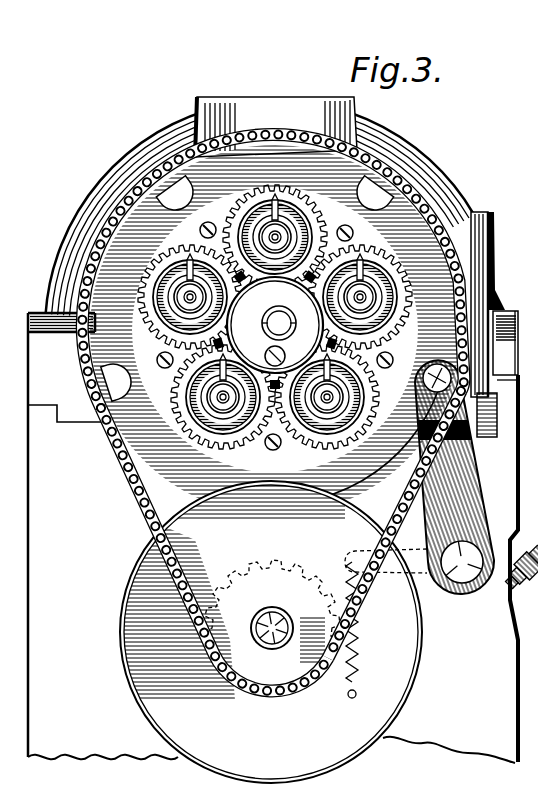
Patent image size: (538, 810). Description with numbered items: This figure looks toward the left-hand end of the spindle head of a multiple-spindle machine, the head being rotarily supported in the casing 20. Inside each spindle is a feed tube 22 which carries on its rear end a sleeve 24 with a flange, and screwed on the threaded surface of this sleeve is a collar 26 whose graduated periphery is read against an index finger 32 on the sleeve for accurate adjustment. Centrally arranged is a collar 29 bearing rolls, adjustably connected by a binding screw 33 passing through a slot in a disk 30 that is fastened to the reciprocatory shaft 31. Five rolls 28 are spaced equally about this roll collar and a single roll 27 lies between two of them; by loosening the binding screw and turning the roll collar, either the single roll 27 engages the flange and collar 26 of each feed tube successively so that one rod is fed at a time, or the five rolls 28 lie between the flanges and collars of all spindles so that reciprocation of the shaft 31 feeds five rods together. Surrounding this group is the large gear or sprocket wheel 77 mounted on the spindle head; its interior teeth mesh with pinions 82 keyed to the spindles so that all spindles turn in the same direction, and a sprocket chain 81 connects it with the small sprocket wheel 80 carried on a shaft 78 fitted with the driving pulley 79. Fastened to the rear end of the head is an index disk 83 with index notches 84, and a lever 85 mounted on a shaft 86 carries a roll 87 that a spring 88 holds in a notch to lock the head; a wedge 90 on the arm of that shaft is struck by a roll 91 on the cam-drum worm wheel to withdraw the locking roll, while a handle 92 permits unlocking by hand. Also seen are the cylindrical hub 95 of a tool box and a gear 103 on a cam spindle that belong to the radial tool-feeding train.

The casing 20 is at (276, 127).
The feed tube 22 is at (178, 297).
The sleeve 24 is at (208, 403).
The collar 26 is at (338, 418).
The single roll 27 is at (275, 325).
The rolls 28 is at (236, 205).
The collar 29 is at (253, 328).
The disk 30 is at (300, 330).
The reciprocatory shaft 31 is at (279, 323).
The index fingers 32 is at (187, 207).
The binding screw 33 is at (264, 353).
The large gear or sprocket wheel 77 is at (128, 500).
The shaft 78 is at (272, 614).
The driving pulley 79 is at (270, 631).
The small gear or sprocket wheel 80 is at (330, 570).
The sprocket chain 81 is at (150, 530).
The pinions 82 is at (316, 190).
The disk 83 is at (372, 190).
The index notches 84 is at (395, 185).
The lever 85 is at (454, 477).
The shaft 86 is at (462, 562).
The roll 87 is at (497, 380).
The spring 88 is at (365, 635).
The wedge 90 is at (472, 352).
The roll 91 is at (452, 316).
The handle 92 is at (484, 212).
The cylindrical hub 95 is at (510, 261).
The gear 103 is at (515, 327).